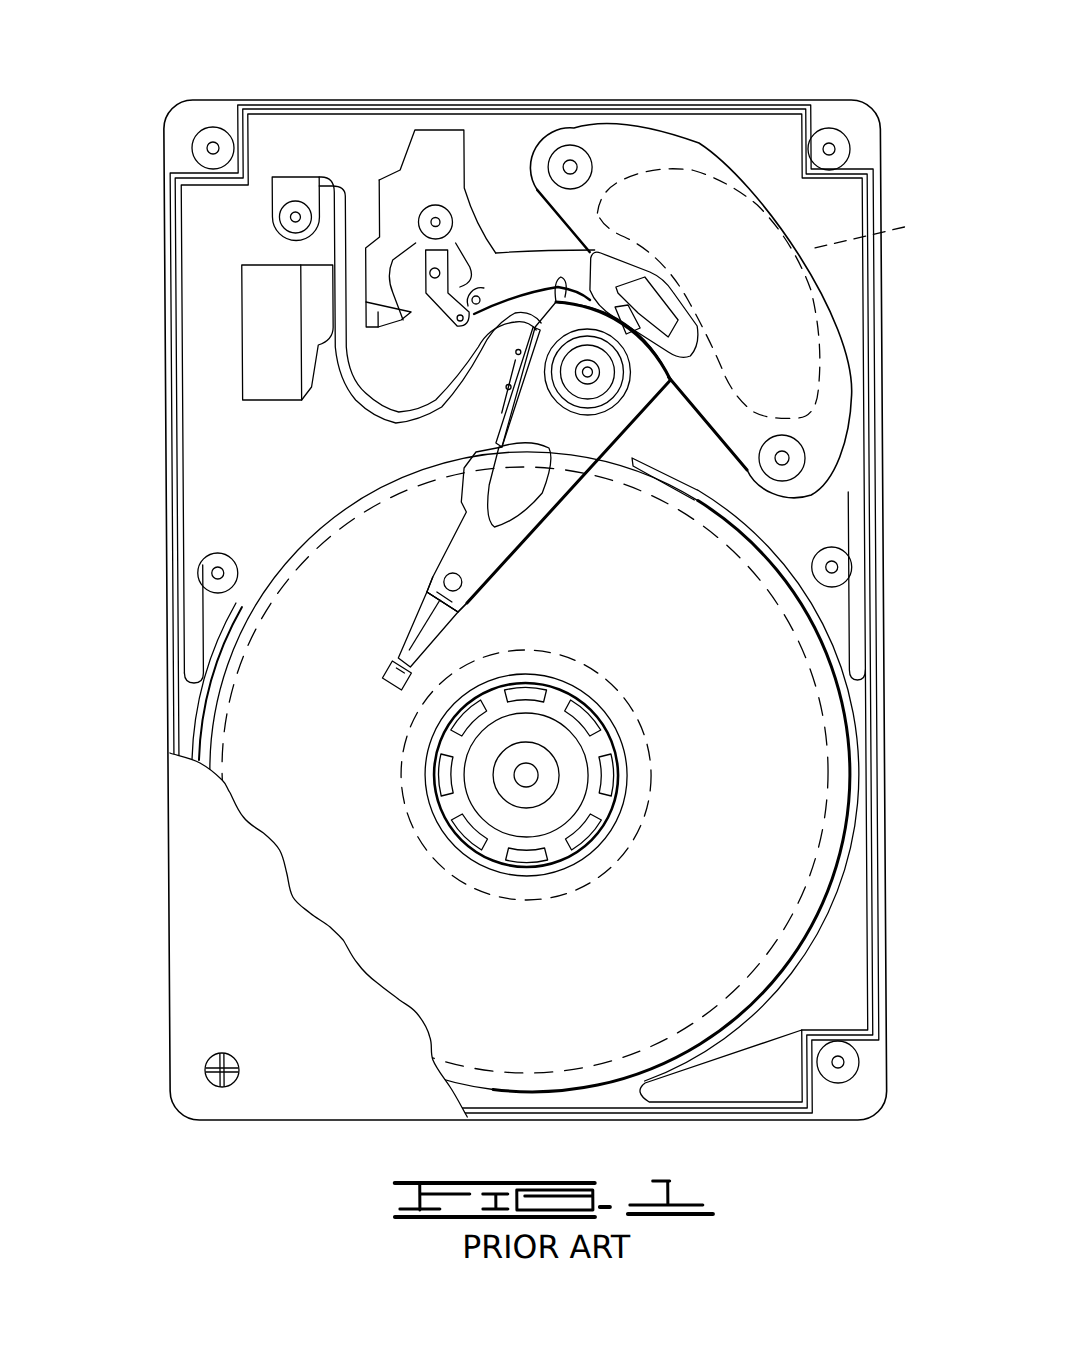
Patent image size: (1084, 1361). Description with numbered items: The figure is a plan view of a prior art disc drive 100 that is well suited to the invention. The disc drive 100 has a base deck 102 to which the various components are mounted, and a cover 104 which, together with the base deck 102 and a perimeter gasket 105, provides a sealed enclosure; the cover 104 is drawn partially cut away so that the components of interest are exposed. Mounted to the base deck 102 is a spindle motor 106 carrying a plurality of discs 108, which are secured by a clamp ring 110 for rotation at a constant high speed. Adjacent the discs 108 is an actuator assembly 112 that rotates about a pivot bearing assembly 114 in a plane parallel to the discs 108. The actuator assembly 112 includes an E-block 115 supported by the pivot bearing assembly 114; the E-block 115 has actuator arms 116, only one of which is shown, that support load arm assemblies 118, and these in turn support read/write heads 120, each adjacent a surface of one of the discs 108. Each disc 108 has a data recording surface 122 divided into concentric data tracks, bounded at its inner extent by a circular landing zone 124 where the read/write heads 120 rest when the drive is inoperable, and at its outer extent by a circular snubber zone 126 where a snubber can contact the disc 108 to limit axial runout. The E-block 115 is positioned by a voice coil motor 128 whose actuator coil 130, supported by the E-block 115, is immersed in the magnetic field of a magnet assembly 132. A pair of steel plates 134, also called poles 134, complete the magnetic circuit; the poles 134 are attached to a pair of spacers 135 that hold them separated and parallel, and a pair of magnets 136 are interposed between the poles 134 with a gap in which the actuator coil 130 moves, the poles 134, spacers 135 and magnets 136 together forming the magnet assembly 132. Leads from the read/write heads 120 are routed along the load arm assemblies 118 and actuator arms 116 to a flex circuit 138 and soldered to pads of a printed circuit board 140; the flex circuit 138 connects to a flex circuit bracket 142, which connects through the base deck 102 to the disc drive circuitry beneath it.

The disc drive 100 is at (286, 80).
The base deck 102 is at (263, 470).
The cover 104 is at (220, 934).
The perimeter gasket 105 is at (808, 103).
The spindle motor 106 is at (537, 812).
The discs 108 is at (849, 713).
The clamp ring 110 is at (598, 744).
The actuator assembly 112 is at (565, 460).
The pivot bearing assembly 114 is at (657, 428).
The E-block 115 is at (606, 392).
The actuator arms 116 is at (463, 558).
The load arm assemblies 118 is at (413, 641).
The read/write heads 120 is at (383, 677).
The data recording surface 122 is at (776, 866).
The landing zone 124 is at (416, 821).
The snubber zone 126 is at (282, 585).
The voice coil motor 128 is at (625, 202).
The actuator coil 130 is at (607, 278).
The magnet assembly 132 is at (826, 420).
The steel plates 134 is at (836, 343).
The spacers 135 is at (554, 152).
The magnets 136 is at (881, 227).
The flex circuit 138 is at (380, 420).
The printed circuit board 140 is at (490, 412).
The flex circuit bracket 142 is at (243, 347).